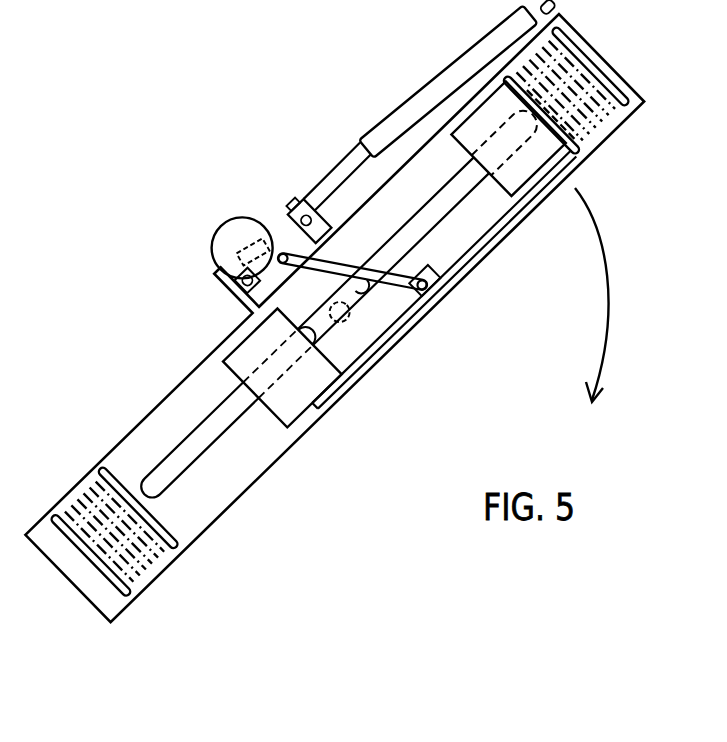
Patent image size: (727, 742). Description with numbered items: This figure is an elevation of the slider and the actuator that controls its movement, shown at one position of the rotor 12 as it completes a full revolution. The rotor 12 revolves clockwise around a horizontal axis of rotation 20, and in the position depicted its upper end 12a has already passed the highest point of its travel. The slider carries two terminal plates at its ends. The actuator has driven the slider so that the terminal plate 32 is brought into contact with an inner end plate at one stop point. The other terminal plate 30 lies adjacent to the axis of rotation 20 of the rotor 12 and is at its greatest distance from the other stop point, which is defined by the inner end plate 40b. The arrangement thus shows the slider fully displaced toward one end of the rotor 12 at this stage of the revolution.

The rotor 12 is at (153, 410).
The upper end 12a is at (603, 60).
The axis of rotation 20 is at (349, 328).
The terminal plate 30 is at (333, 392).
The terminal plate 32 is at (561, 149).
The inner end plate 40b is at (157, 536).